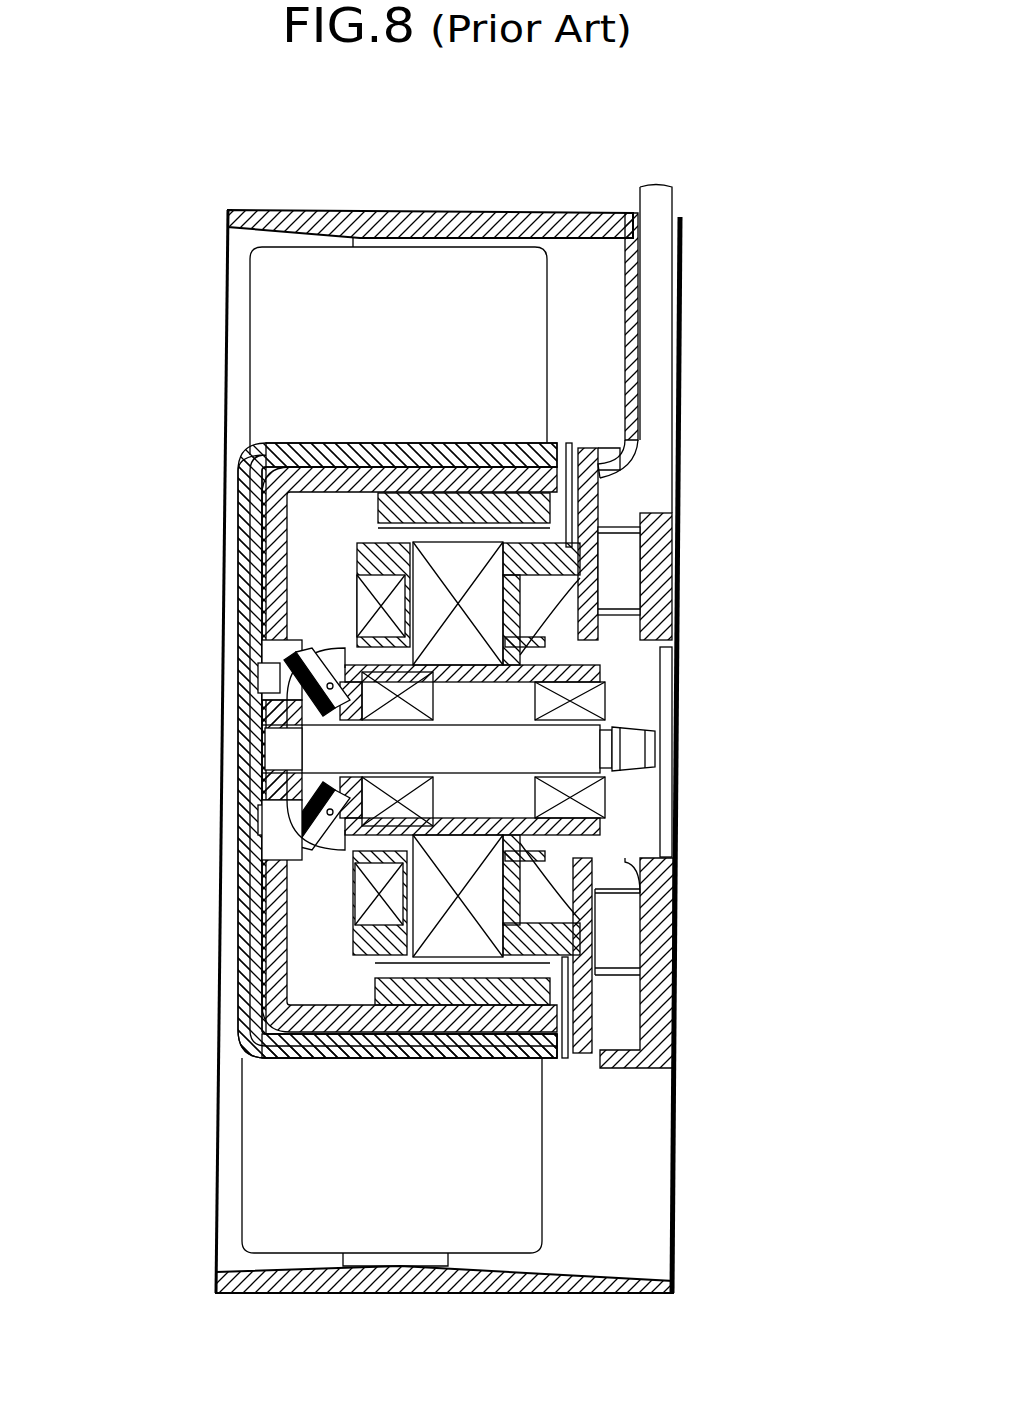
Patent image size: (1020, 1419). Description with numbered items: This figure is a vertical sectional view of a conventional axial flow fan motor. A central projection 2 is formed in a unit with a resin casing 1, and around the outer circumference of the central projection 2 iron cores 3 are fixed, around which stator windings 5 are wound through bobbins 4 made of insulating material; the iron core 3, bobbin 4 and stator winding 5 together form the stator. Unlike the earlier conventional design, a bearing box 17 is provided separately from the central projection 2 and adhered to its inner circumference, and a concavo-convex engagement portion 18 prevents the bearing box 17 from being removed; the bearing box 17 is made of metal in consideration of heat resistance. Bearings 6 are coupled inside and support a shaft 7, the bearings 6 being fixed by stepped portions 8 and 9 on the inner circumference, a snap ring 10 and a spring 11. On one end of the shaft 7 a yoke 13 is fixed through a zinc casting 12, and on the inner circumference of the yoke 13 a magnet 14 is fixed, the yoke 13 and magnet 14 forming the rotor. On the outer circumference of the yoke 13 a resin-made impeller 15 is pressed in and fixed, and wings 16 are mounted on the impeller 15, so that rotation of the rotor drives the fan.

The resin casing 1 is at (617, 1250).
The central projection 2 is at (593, 893).
The iron core 3 is at (452, 935).
The bobbin 4 is at (245, 1048).
The stator winding 5 is at (348, 905).
The bearing 6 is at (605, 795).
The shaft 7 is at (600, 748).
The stepped portion 8 is at (610, 690).
The stepped portion 9 is at (262, 648).
The snap ring 10 is at (645, 697).
The spring 11 is at (262, 798).
The zinc casting 12 is at (258, 873).
The yoke 13 is at (275, 558).
The magnet 14 is at (600, 522).
The impeller 15 is at (258, 452).
The wing 16 is at (430, 369).
The bearing box 17 is at (615, 590).
The concavo-convex engagement portion 18 is at (640, 650).